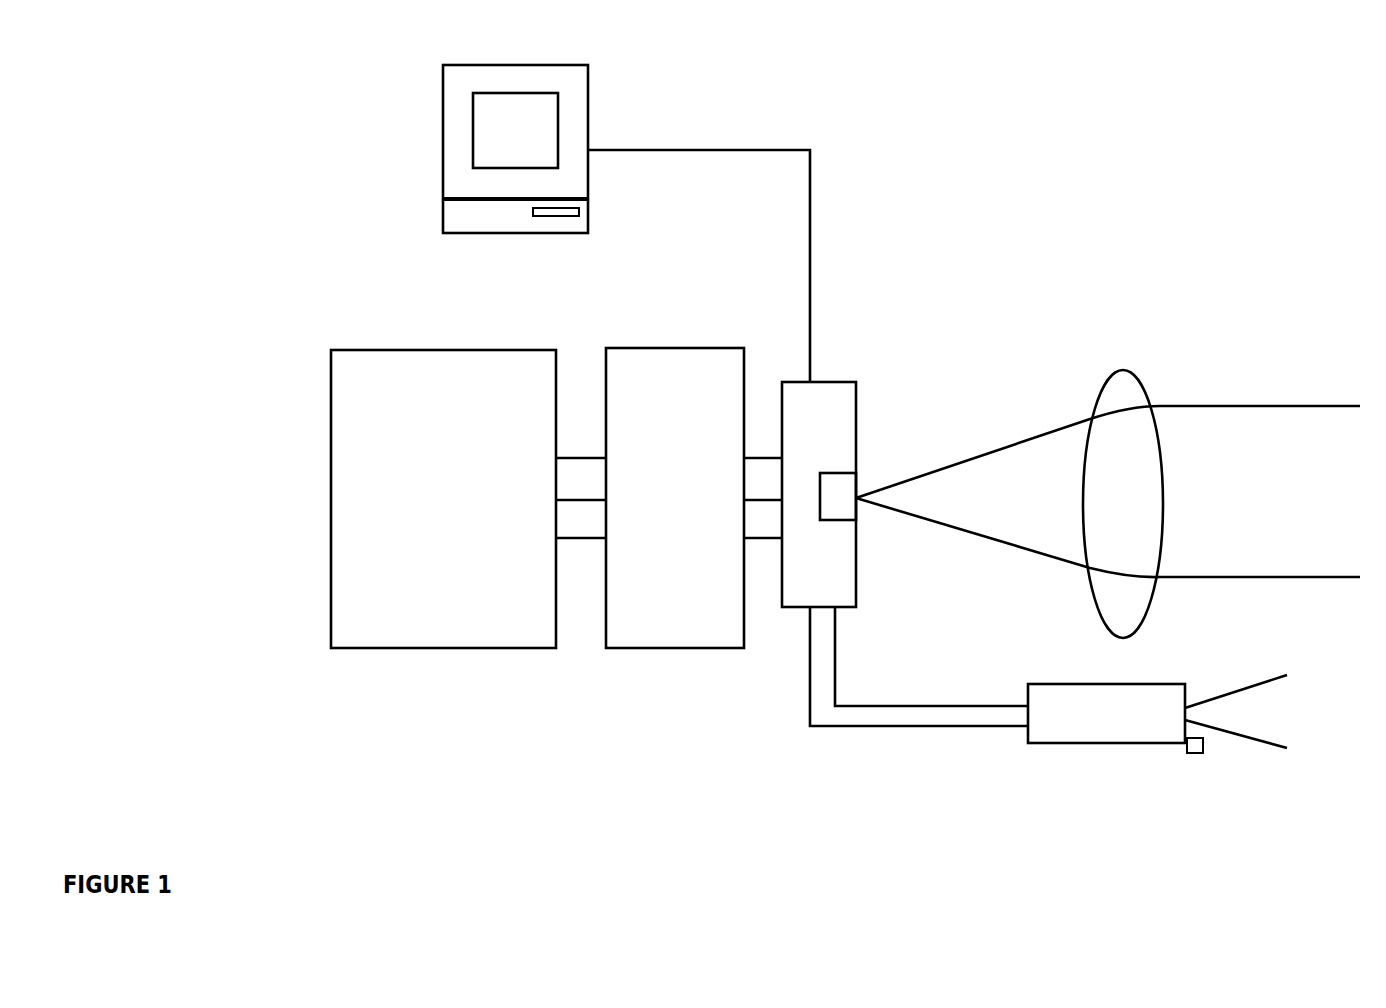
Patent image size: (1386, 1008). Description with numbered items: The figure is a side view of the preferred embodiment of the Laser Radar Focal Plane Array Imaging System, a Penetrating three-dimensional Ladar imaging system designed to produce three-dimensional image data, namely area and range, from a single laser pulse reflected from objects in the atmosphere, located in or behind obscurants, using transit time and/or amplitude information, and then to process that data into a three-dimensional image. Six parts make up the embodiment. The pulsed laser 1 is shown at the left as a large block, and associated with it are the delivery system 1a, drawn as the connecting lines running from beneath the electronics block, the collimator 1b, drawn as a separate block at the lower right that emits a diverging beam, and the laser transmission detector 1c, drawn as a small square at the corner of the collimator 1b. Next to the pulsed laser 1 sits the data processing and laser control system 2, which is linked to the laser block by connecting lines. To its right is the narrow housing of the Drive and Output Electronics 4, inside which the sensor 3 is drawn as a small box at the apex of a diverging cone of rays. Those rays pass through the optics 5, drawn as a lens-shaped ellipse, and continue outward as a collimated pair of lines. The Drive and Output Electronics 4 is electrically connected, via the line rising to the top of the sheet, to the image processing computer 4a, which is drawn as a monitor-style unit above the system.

The pulsed laser 1 is at (469, 345).
The delivery system 1a is at (808, 727).
The collimator 1b is at (1068, 749).
The laser transmission detector 1c is at (1198, 756).
The data processing and laser control system 2 is at (649, 344).
The sensor 3 is at (834, 510).
The drive and output electronics 4 is at (851, 419).
The image processing computer 4a is at (590, 128).
The optics 5 is at (1111, 355).